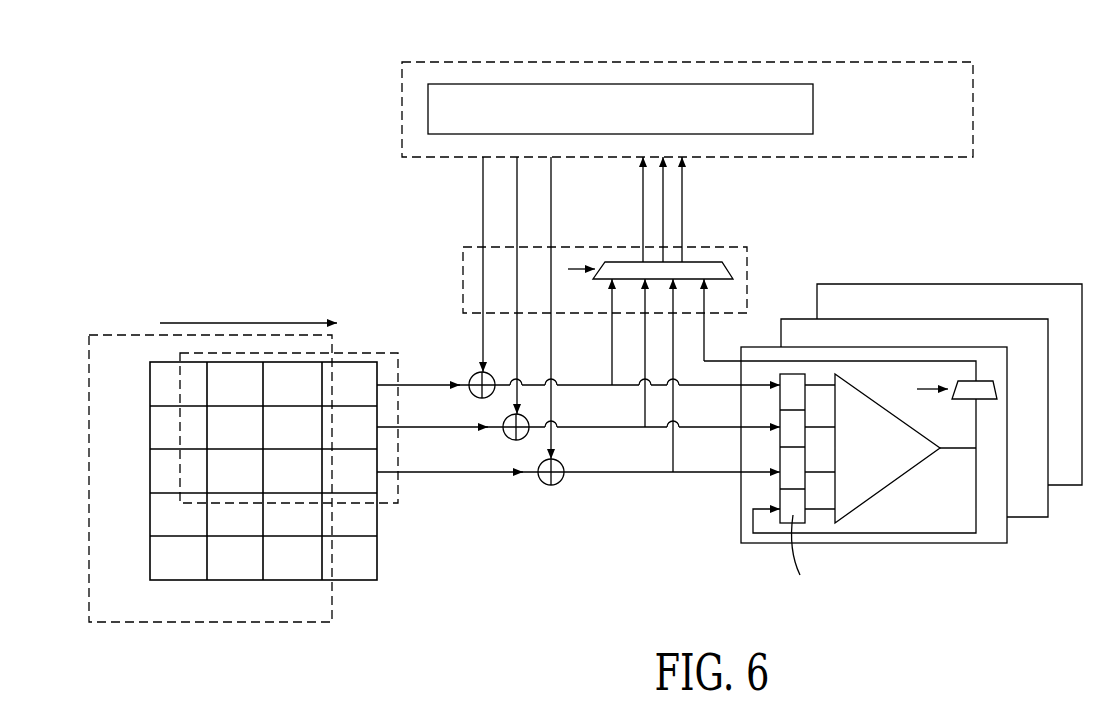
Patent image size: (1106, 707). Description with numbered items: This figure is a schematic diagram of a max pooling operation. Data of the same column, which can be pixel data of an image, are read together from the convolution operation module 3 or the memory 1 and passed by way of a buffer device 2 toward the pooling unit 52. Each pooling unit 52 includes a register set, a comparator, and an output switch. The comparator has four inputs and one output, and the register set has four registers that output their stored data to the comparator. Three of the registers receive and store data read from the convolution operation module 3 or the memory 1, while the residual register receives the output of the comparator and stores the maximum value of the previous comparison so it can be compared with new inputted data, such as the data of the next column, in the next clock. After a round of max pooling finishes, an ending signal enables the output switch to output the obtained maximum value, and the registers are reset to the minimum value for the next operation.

The memory 1 is at (905, 60).
The buffer device 2 is at (710, 245).
The convolution operation module 3 is at (283, 622).
The pooling unit 52 is at (924, 543).